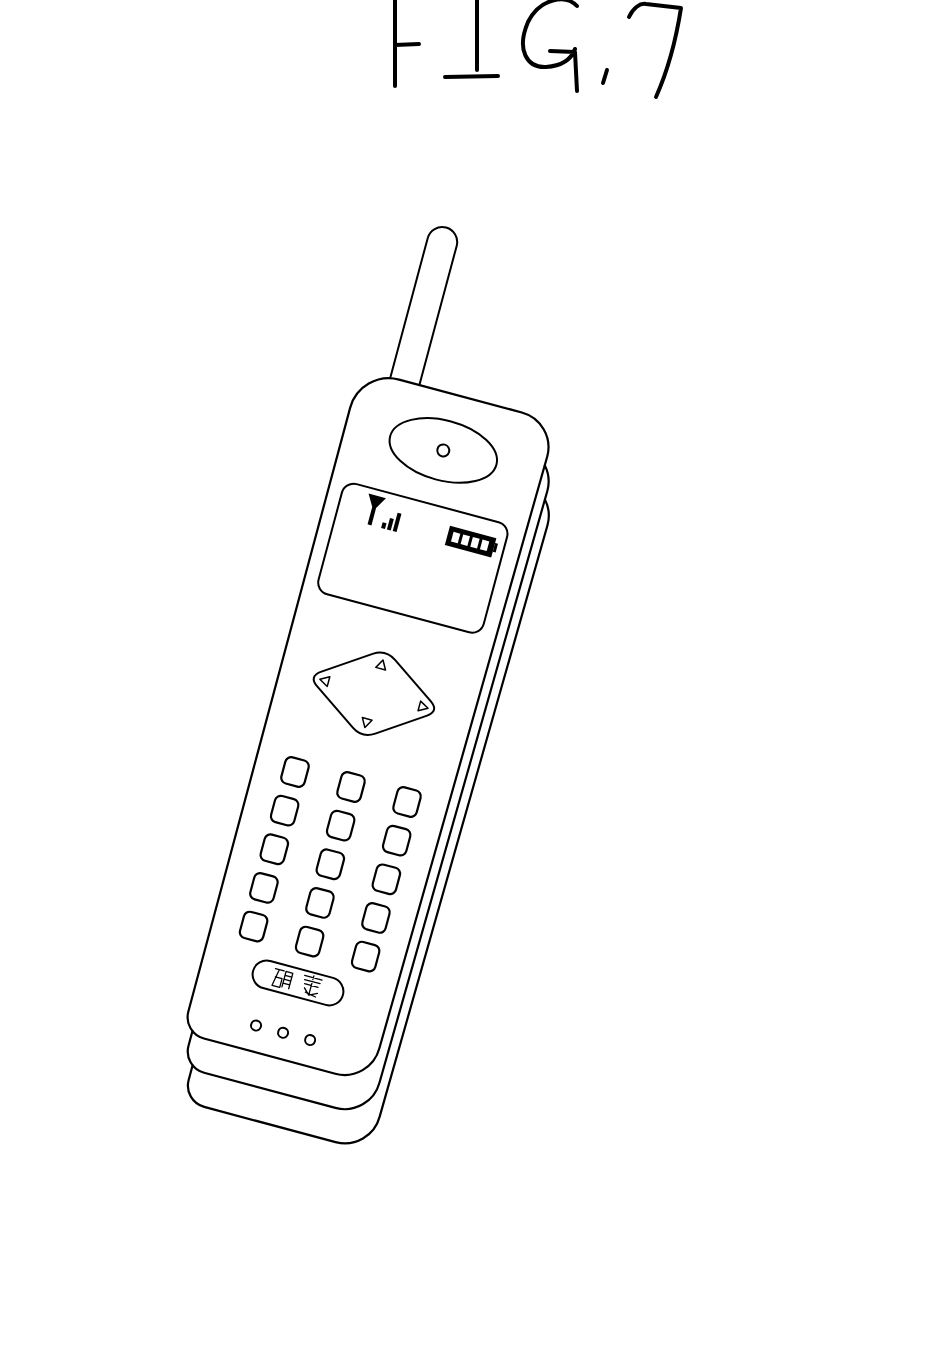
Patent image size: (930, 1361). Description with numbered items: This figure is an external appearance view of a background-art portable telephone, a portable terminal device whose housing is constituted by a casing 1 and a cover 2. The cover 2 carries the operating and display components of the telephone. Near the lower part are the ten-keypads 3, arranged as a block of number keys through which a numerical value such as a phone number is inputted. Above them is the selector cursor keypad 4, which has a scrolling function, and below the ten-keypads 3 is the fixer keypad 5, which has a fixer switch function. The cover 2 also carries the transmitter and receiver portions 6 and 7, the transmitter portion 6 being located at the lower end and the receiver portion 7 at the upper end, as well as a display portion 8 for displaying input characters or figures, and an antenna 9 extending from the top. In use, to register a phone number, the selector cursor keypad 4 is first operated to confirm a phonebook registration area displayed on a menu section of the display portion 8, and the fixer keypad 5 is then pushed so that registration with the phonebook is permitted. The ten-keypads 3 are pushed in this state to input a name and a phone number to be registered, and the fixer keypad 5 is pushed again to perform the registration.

The casing 1 is at (378, 1125).
The cover 2 is at (305, 560).
The ten-keypads 3 is at (405, 862).
The selector cursor keypad 4 is at (443, 690).
The fixer keypad 5 is at (343, 973).
The transmitter portion 6 is at (243, 1013).
The receiver portion 7 is at (463, 447).
The display portion 8 is at (497, 543).
The antenna 9 is at (440, 253).